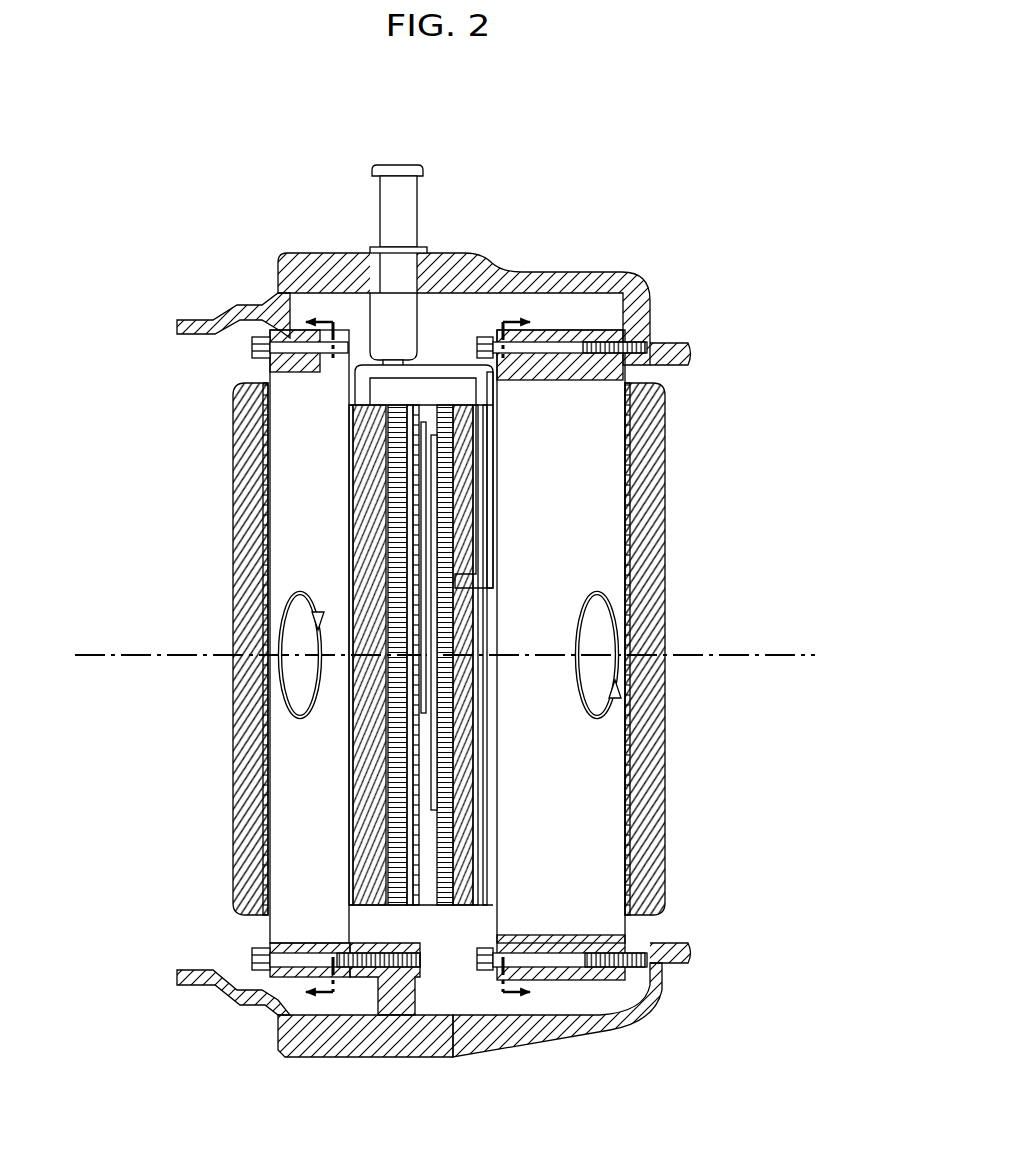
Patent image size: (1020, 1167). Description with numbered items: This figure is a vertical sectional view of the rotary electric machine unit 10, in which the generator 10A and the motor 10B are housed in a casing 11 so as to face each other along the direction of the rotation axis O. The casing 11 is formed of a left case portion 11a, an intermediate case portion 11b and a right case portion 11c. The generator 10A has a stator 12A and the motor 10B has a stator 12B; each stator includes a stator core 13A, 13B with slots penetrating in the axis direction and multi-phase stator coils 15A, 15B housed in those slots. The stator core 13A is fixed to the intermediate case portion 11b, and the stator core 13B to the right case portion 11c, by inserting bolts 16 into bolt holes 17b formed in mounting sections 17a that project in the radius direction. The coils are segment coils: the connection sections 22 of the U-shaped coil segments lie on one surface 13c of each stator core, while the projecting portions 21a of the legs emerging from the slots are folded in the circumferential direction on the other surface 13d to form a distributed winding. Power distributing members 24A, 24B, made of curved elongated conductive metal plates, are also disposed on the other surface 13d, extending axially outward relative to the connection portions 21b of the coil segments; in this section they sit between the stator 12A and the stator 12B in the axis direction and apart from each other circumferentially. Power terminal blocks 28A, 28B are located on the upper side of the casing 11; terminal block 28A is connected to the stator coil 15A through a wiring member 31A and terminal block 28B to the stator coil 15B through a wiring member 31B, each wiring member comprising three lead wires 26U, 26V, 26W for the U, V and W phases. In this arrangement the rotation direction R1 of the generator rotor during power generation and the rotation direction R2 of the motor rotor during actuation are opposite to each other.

The rotary electric machine unit 10 is at (630, 156).
The generator 10A is at (419, 636).
The motor 10B is at (642, 636).
The casing 11 is at (305, 250).
The left case portion 11a is at (213, 993).
The intermediate case portion 11b is at (370, 1037).
The right case portion 11c is at (587, 1020).
The stator 12A is at (414, 649).
The stator 12B is at (706, 649).
The stator core 13A is at (305, 560).
The stator core 13B is at (600, 561).
The one surface of the stator core 13c is at (237, 594).
The other surface of the stator core 13d is at (348, 668).
The stator coil 15A is at (414, 649).
The stator coil 15B is at (668, 690).
The bolt 16 is at (293, 348).
The mounting section 17a is at (608, 333).
The bolt hole 17b is at (313, 353).
The projecting portion 21a is at (480, 822).
The connection portion 21b is at (345, 826).
The connection section 22 is at (245, 545).
The power distributing member 24A is at (452, 598).
The power distributing member 24B is at (440, 650).
The lead wire 26U is at (435, 492).
The lead wire 26V is at (435, 492).
The lead wire 26W is at (361, 372).
The power terminal block 28A is at (443, 244).
The power terminal block 28B is at (402, 210).
The wiring member 31A is at (346, 388).
The wiring member 31B is at (499, 406).
The rotation direction R1 is at (282, 740).
The rotation direction R2 is at (617, 735).
The rotation axis O is at (797, 642).